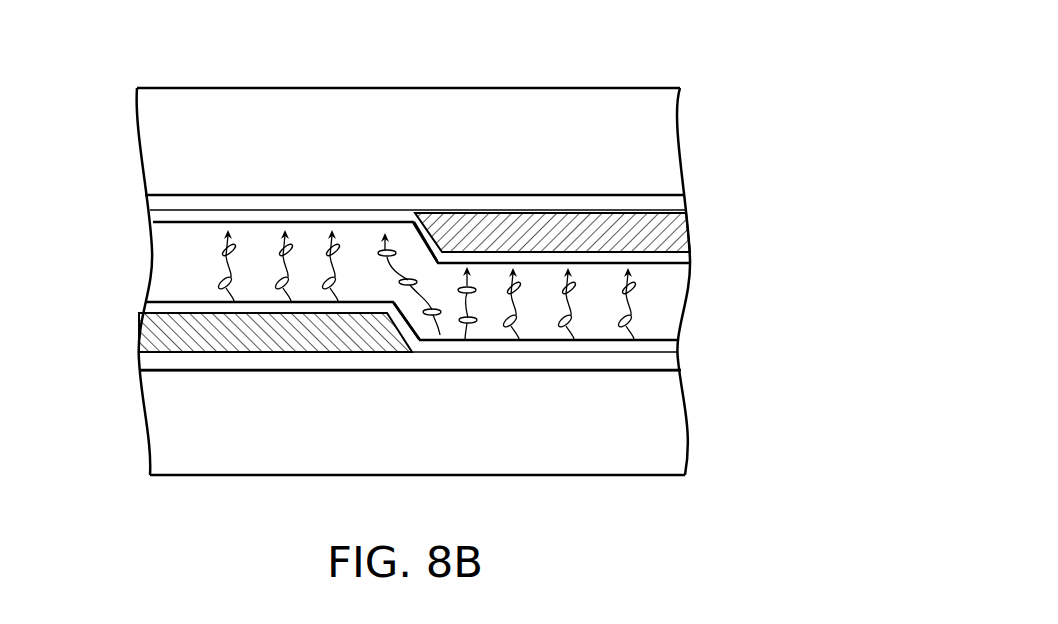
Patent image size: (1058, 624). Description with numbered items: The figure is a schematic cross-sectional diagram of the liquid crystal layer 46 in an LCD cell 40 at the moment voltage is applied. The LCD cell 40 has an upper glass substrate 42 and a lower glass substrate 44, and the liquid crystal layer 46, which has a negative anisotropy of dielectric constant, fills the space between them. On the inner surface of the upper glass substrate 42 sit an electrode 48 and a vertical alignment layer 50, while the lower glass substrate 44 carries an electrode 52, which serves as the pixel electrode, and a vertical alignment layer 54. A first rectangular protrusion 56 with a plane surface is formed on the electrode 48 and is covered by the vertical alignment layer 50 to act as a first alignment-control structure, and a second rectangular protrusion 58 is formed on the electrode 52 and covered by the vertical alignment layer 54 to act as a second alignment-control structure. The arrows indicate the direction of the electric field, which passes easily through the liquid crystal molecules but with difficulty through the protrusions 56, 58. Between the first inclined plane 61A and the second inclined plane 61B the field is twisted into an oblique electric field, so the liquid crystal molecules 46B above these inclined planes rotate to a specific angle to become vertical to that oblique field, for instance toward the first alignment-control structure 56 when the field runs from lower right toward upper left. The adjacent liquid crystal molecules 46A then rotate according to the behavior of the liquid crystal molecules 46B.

The LCD cell 40 is at (642, 66).
The upper glass substrate 42 is at (655, 143).
The lower glass substrate 44 is at (670, 441).
The liquid crystal layer 46 is at (493, 174).
The liquid crystal molecules 46A is at (338, 236).
The liquid crystal molecules 46B is at (466, 266).
The electrode 48 is at (655, 201).
The vertical alignment layer 50 is at (655, 259).
The electrode 52 is at (672, 364).
The vertical alignment layer 54 is at (655, 346).
The first rectangular protrusion 56 is at (660, 230).
The second rectangular protrusion 58 is at (160, 334).
The first inclined plane 61A is at (430, 247).
The second inclined plane 61B is at (412, 322).